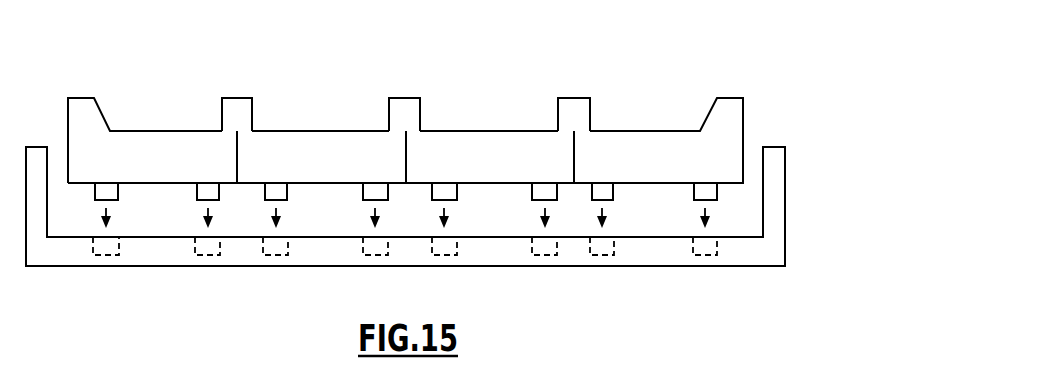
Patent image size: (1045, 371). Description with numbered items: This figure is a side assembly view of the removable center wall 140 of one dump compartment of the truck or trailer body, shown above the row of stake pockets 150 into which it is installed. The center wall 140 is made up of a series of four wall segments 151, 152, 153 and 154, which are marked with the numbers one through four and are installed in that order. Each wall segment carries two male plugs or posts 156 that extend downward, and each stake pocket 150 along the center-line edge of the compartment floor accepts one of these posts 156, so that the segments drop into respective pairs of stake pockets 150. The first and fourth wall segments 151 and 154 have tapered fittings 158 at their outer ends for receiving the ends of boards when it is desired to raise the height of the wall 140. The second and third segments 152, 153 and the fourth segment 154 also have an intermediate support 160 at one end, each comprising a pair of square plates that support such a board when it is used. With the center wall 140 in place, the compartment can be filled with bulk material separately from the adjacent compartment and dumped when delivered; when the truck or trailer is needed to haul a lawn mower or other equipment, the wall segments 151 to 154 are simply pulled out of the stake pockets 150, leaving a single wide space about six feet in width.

The center wall 140 is at (726, 68).
The stake pocket 150 is at (197, 256).
The first wall segment 151 is at (170, 131).
The second wall segment 152 is at (347, 131).
The third wall segment 153 is at (515, 131).
The fourth wall segment 154 is at (670, 131).
The post 156 is at (716, 200).
The tapered fitting 158 is at (82, 98).
The intermediate support 160 is at (240, 98).